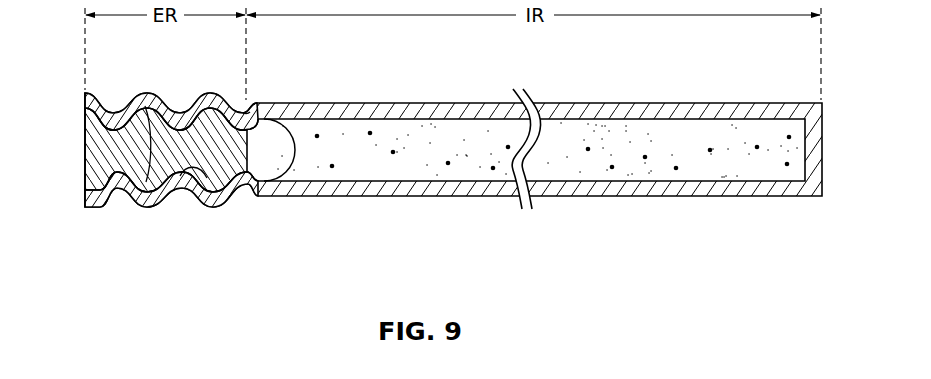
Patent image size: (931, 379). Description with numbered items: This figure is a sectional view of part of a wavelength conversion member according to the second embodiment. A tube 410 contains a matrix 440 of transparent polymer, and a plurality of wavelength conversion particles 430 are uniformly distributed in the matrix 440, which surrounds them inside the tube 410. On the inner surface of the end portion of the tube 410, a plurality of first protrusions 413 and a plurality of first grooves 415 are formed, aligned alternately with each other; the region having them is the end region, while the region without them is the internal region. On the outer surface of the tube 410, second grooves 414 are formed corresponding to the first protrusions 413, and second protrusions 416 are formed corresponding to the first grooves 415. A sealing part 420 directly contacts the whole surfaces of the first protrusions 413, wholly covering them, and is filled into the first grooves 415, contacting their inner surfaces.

The tube 410 is at (470, 188).
The first protrusions 413 is at (283, 103).
The second grooves 414 is at (251, 103).
The first grooves 415 is at (143, 104).
The second protrusions 416 is at (148, 207).
The sealing part 420 is at (86, 150).
The wavelength conversion particles 430 is at (392, 154).
The matrix 440 is at (315, 162).